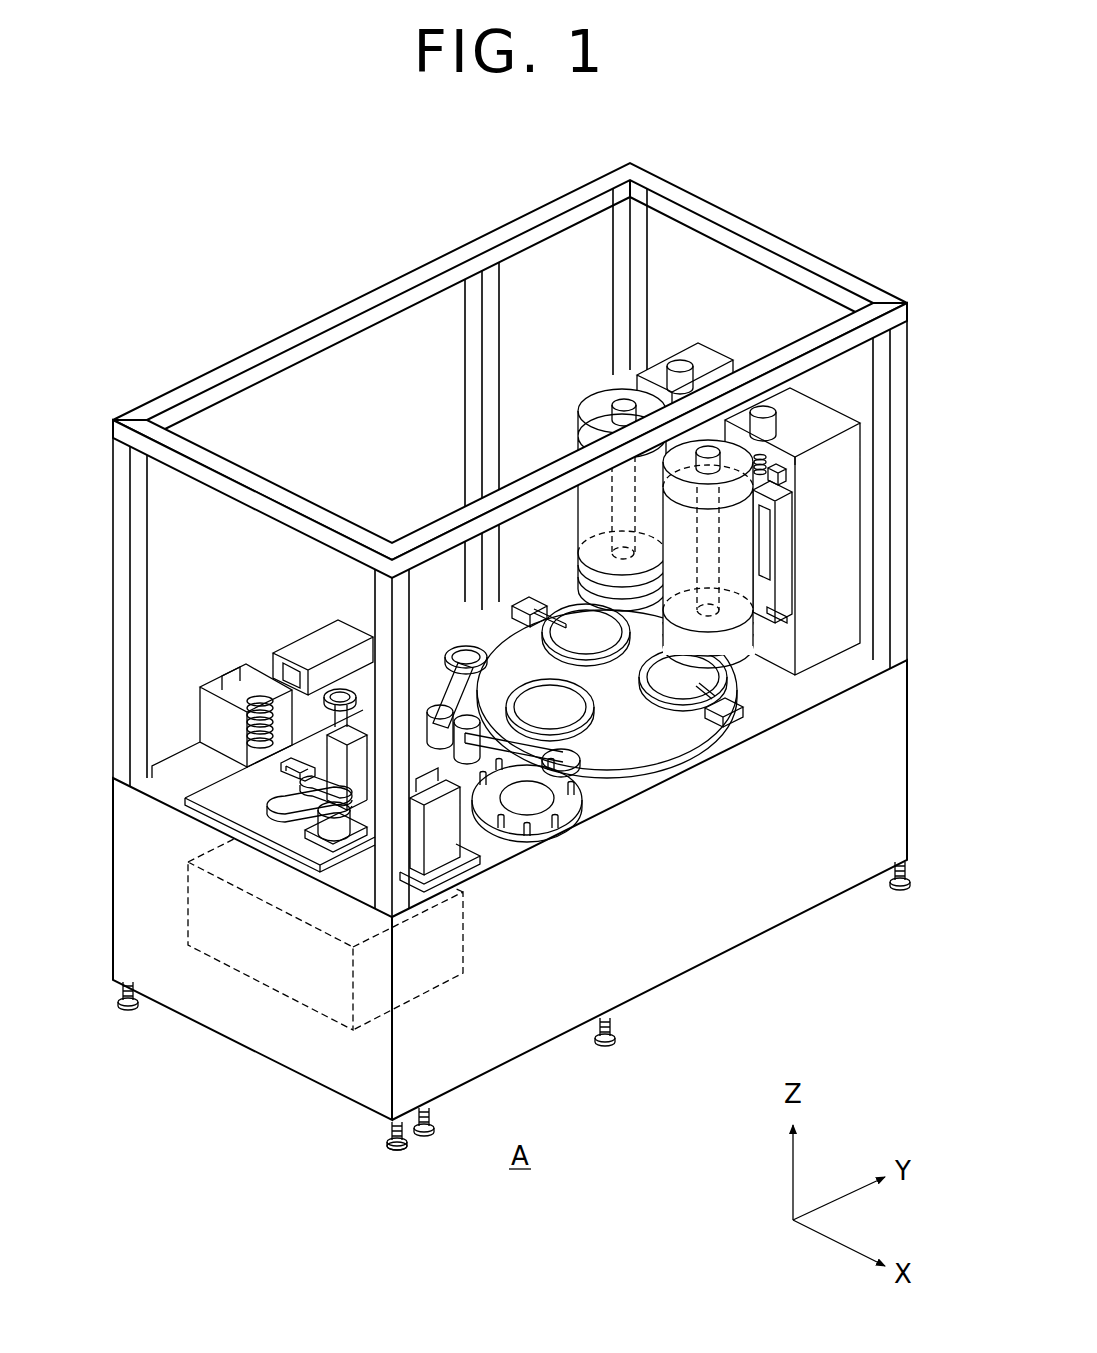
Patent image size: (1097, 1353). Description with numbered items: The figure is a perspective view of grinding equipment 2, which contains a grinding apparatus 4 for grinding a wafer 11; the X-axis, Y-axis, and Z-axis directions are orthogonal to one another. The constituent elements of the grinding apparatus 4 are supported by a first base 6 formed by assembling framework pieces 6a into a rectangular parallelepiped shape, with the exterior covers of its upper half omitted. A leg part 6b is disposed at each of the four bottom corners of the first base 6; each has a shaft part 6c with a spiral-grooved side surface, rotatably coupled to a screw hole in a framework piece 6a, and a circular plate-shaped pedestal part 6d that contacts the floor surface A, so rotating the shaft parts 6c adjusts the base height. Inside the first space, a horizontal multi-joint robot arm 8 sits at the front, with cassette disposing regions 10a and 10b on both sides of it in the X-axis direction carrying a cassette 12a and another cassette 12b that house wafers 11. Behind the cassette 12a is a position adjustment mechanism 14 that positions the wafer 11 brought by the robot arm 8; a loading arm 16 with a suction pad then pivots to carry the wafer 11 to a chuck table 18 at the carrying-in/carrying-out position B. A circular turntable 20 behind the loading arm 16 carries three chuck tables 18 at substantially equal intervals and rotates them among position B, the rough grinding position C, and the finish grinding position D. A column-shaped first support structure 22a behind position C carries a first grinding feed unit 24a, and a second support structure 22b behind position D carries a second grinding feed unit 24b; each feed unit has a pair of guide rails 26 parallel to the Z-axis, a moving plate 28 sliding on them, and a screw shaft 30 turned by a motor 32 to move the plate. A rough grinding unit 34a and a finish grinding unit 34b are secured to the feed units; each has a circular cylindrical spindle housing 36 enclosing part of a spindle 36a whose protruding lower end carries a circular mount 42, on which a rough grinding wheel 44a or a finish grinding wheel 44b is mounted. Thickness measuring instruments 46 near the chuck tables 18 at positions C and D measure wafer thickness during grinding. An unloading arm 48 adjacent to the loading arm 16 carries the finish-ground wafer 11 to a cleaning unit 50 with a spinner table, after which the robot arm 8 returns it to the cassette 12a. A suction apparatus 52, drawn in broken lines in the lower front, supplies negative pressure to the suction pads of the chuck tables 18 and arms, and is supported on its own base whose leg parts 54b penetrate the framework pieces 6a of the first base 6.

The grinding equipment 2 is at (243, 237).
The grinding apparatus 4 is at (772, 222).
The first base 6 is at (113, 418).
The framework pieces 6a is at (617, 247).
The leg part 6b is at (123, 1023).
The shaft part 6c is at (393, 1127).
The pedestal part 6d is at (396, 1148).
The robot arm 8 is at (276, 833).
The cassette disposing region 10a is at (458, 870).
The cassette disposing region 10b is at (200, 752).
The wafer 11 is at (255, 698).
The cassette 12a is at (462, 840).
The cassette 12b is at (205, 682).
The position adjustment mechanism 14 is at (536, 804).
The loading arm 16 is at (585, 777).
The chuck table 18 is at (670, 675).
The turntable 20 is at (667, 740).
The first support structure 22a is at (700, 362).
The second support structure 22b is at (855, 490).
The first grinding feed unit 24a is at (704, 387).
The second grinding feed unit 24b is at (800, 456).
The guide rails 26 is at (785, 471).
The moving plate 28 is at (790, 534).
The screw shaft 30 is at (764, 455).
The motor 32 is at (676, 360).
The rough grinding unit 34a is at (688, 519).
The finish grinding unit 34b is at (745, 522).
The spindle housing 36 is at (596, 486).
The spindle 36a is at (600, 515).
The mount 42 is at (580, 582).
The rough grinding wheel 44a is at (553, 624).
The finish grinding wheel 44b is at (725, 690).
The thickness measuring instrument 46 is at (500, 616).
The unloading arm 48 is at (443, 640).
The cleaning unit 50 is at (297, 632).
The suction apparatus 52 is at (300, 983).
The leg part 54b is at (429, 1150).